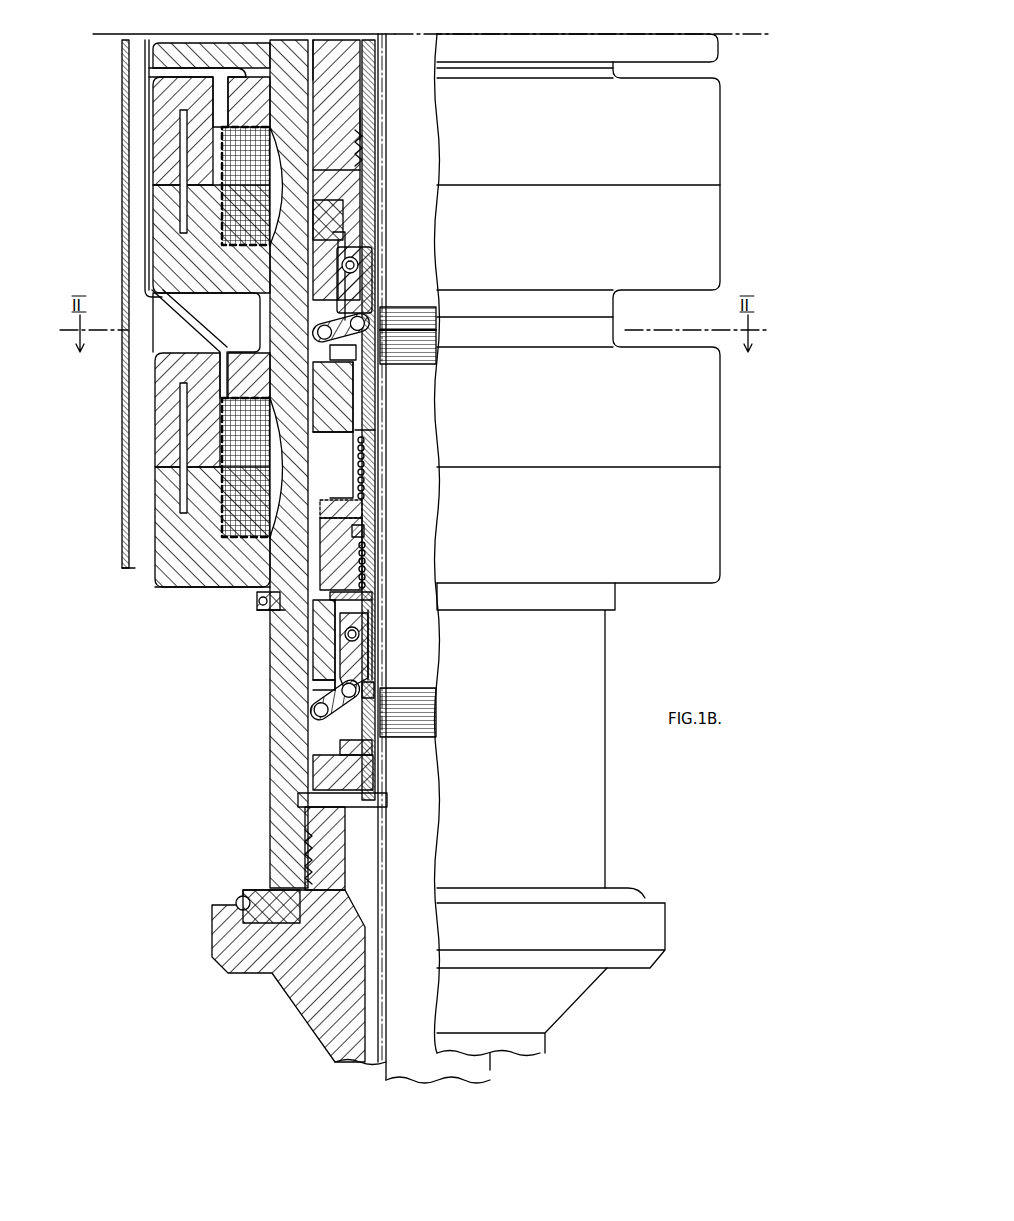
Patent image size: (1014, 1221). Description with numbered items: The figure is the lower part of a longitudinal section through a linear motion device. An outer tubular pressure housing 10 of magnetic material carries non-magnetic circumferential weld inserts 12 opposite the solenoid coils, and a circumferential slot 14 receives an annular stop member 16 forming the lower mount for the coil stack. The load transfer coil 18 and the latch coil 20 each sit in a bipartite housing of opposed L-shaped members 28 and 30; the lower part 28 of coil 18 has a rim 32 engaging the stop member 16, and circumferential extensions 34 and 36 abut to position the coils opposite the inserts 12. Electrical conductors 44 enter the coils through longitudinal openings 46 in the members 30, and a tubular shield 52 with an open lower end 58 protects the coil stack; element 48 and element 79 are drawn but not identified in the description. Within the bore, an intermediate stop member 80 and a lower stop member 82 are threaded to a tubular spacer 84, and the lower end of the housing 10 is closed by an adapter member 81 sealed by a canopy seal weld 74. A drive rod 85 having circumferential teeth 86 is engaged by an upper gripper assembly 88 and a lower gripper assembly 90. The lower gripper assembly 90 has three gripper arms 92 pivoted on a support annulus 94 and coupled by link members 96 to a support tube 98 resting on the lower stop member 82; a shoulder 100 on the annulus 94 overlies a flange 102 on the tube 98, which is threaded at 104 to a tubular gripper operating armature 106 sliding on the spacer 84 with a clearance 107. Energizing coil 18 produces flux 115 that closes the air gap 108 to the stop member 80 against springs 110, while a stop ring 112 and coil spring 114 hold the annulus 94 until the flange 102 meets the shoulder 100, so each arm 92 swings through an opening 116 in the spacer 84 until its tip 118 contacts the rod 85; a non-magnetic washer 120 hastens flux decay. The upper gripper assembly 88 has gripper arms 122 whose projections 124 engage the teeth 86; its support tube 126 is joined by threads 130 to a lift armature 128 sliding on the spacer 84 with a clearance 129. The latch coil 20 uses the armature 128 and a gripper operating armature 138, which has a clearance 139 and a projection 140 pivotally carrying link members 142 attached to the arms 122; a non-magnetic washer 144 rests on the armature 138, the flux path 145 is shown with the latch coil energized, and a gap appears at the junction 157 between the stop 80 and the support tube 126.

The outer tubular pressure housing 10 is at (606, 805).
The circumferential weld insert 12 is at (372, 190).
The circumferential slot 14 is at (257, 604).
The annular stop member 16 is at (272, 612).
The load transfer coil 18 is at (190, 587).
The latch coil 20 is at (230, 200).
The L-shaped housing member 28 is at (178, 43).
The L-shaped housing member 30 is at (170, 118).
The downwardly extending rim 32 is at (245, 588).
The circumferential extension 34 is at (260, 320).
The circumferential extension 36 is at (258, 78).
The electrical conductors 44 is at (144, 72).
The longitudinal opening 46 is at (215, 140).
The pole 48 is at (232, 75).
The tubular shield 52 is at (126, 40).
The lower end of coil stack shield 58 is at (130, 572).
The canopy seal weld 74 is at (242, 896).
The spring seat 79 is at (375, 425).
The intermediate stop member 80 is at (370, 400).
The adapter member 81 is at (305, 1000).
The lower stop member 82 is at (370, 790).
The tubular spacer 84 is at (368, 40).
The drive rod 85 is at (420, 45).
The teeth 86 is at (428, 366).
The upper gripper assembly 88 is at (360, 285).
The lower gripper assembly 90 is at (370, 640).
The gripper arm 92 is at (368, 656).
The support annulus 94 is at (358, 603).
The link member 96 is at (318, 706).
The support tube 98 is at (320, 652).
The downwardly facing shoulder 100 is at (372, 748).
The upwardly facing flange 102 is at (318, 768).
The threading 104 is at (372, 596).
The tubular gripper operating armature 106 is at (367, 556).
The clearance 107 is at (318, 686).
The air gap 108 is at (345, 488).
The spring 110 is at (366, 464).
The stop ring 112 is at (366, 532).
The coil spring 114 is at (367, 580).
The magnetic flux 115 is at (366, 446).
The opening 116 is at (372, 615).
The tip 118 is at (375, 686).
The non-magnetic washer 120 is at (364, 508).
The movable gripper arm 122 is at (375, 290).
The projection 124 is at (425, 335).
The upper gripper assembly support tube 126 is at (356, 206).
The tubular armature 128 is at (372, 80).
The clearance 129 is at (325, 40).
The threads 130 is at (390, 148).
The tubular gripper operating armature 138 is at (348, 236).
The clearance 139 is at (372, 250).
The downwardly extending projection 140 is at (345, 318).
The link member 142 is at (345, 353).
The non-magnetic washer 144 is at (369, 179).
The flux path 145 is at (372, 125).
The junction 157 is at (365, 386).